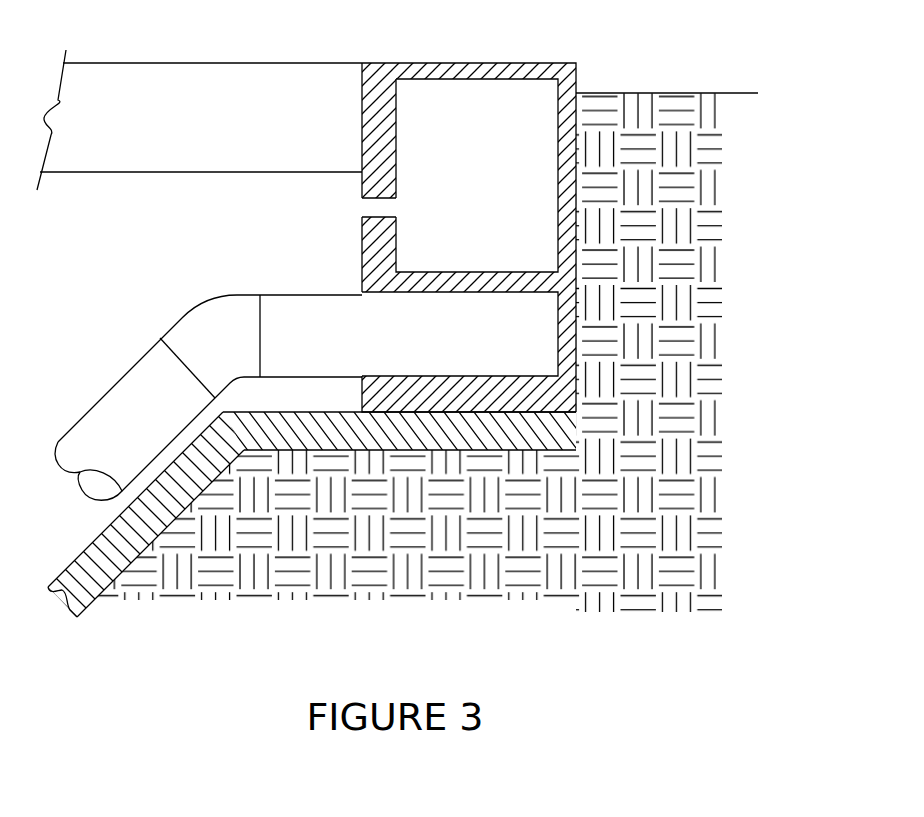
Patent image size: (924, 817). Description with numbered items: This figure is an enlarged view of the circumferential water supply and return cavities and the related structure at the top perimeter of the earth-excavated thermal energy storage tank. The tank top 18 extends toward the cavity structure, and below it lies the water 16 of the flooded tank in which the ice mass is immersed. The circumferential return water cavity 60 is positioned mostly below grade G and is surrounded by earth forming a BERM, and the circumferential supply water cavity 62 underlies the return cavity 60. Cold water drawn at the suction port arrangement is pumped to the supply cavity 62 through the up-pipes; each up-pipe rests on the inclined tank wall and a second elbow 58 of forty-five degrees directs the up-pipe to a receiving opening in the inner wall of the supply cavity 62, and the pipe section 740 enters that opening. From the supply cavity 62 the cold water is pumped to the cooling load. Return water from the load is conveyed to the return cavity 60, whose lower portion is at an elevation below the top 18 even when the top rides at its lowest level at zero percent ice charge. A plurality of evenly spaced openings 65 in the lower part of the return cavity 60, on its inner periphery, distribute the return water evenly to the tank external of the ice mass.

The tank top 18 is at (200, 136).
The water 16 is at (256, 251).
The second 45° elbow 58 is at (192, 308).
The pipe outlet end 740 is at (133, 363).
The circumferential return water cavity 60 is at (454, 176).
The circumferential supply water cavity 62 is at (454, 356).
The openings 65 is at (396, 200).
The grade G is at (687, 98).
The berm BERM is at (698, 241).